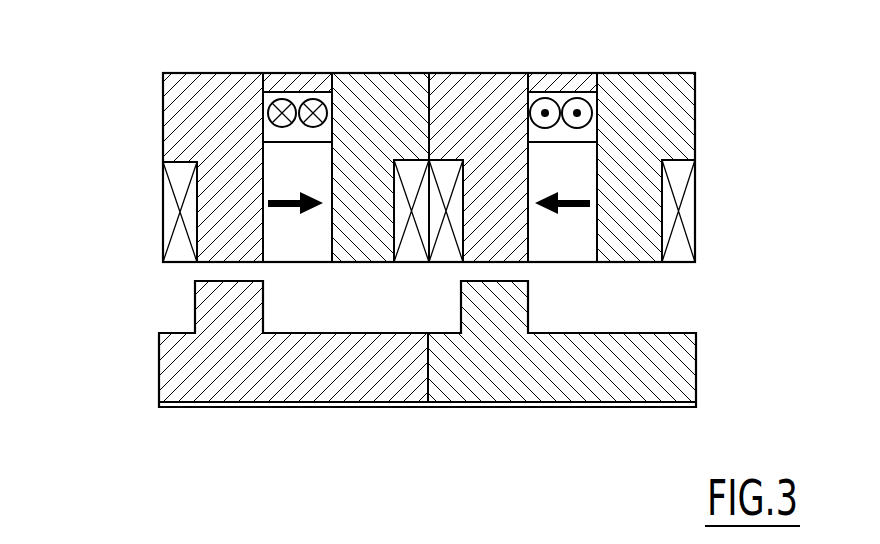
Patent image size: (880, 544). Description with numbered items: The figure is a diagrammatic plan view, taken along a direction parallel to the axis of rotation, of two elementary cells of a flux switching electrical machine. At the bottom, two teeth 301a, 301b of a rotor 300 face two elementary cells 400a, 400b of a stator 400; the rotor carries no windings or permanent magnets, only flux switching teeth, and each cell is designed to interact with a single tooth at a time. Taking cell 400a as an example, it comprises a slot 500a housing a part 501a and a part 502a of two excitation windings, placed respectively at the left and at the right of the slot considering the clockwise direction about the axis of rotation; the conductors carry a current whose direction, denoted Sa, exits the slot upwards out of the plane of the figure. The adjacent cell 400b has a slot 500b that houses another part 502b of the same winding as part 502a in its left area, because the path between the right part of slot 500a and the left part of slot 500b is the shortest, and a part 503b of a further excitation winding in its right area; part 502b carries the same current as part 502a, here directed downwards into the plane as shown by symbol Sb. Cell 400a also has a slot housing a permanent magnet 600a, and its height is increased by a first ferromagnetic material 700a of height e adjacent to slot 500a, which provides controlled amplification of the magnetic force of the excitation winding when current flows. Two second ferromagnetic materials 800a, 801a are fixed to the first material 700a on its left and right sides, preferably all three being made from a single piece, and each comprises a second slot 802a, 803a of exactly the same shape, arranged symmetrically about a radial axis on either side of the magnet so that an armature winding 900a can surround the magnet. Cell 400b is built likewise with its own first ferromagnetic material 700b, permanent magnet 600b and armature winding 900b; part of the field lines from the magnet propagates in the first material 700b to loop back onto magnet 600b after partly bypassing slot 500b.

The rotor 300 is at (398, 420).
The tooth 301a is at (227, 373).
The tooth 301b is at (545, 370).
The stator 400 is at (715, 285).
The elementary cell 400a is at (133, 132).
The elementary cell 400b is at (725, 70).
The slot 500a is at (276, 90).
The slot 500b is at (602, 90).
The part of excitation winding 501a is at (267, 127).
The part of excitation winding 502a is at (285, 143).
The part of excitation winding 502b is at (565, 90).
The part of excitation winding 503b is at (590, 133).
The permanent magnet 600a is at (323, 248).
The permanent magnet 600b is at (583, 250).
The first ferromagnetic material 700a is at (308, 82).
The first ferromagnetic material 700b is at (543, 83).
The second ferromagnetic material 800a is at (173, 95).
The second ferromagnetic material 801a is at (350, 243).
The second slot 802a is at (165, 207).
The second slot 803a is at (412, 168).
The armature winding 900a is at (173, 253).
The armature winding 900b is at (692, 212).